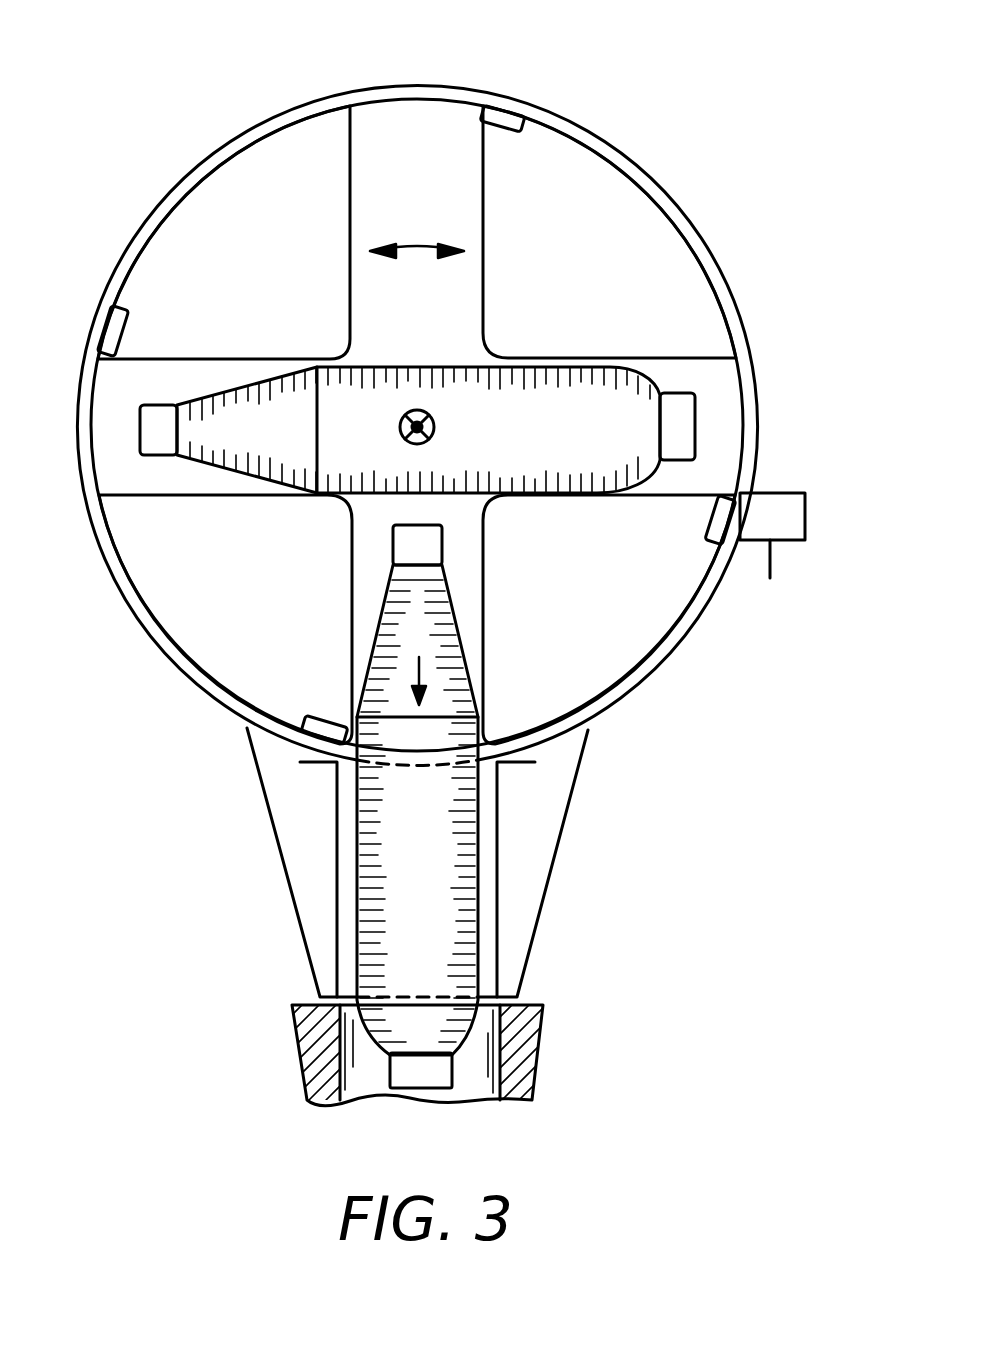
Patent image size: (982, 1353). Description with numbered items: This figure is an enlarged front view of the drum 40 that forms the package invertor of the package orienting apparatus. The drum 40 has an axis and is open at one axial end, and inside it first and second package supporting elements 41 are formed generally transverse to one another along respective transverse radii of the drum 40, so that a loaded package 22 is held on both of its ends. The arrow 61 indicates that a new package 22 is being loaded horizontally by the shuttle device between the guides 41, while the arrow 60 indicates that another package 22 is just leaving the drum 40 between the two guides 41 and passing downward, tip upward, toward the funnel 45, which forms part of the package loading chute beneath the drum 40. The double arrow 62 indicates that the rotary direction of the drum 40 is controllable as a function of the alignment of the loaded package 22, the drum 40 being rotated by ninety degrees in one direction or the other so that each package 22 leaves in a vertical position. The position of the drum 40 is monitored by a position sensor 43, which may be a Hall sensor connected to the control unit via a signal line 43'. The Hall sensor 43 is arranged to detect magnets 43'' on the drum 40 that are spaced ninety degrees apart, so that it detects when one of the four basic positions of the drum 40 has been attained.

The drum 40 is at (450, 72).
The package supporting elements 41 is at (248, 189).
The position sensor 43 is at (801, 494).
The signal line 43' is at (801, 571).
The magnets 43'' is at (404, 393).
The package 22 is at (568, 388).
The arrow 61 is at (436, 431).
The arrow 60 is at (420, 673).
The double arrow 62 is at (423, 243).
The funnel 45 is at (510, 1073).